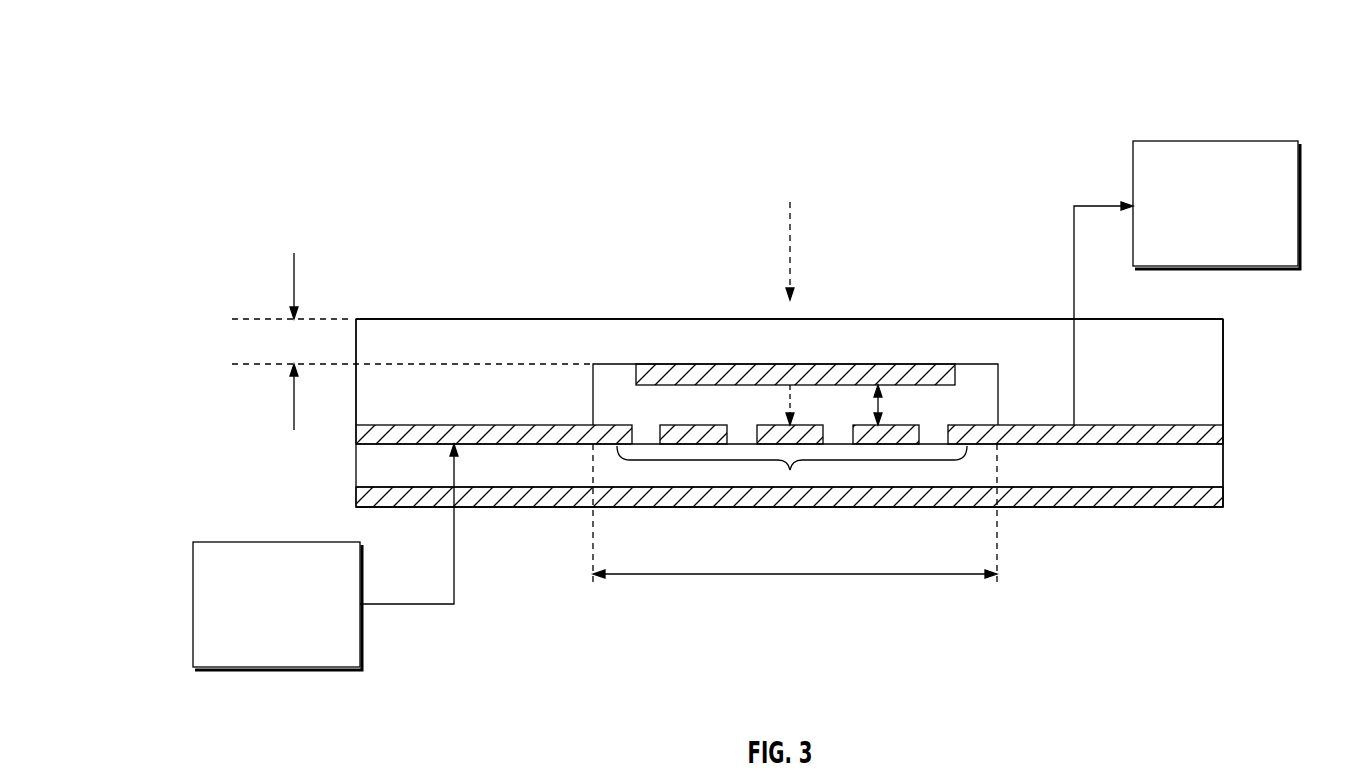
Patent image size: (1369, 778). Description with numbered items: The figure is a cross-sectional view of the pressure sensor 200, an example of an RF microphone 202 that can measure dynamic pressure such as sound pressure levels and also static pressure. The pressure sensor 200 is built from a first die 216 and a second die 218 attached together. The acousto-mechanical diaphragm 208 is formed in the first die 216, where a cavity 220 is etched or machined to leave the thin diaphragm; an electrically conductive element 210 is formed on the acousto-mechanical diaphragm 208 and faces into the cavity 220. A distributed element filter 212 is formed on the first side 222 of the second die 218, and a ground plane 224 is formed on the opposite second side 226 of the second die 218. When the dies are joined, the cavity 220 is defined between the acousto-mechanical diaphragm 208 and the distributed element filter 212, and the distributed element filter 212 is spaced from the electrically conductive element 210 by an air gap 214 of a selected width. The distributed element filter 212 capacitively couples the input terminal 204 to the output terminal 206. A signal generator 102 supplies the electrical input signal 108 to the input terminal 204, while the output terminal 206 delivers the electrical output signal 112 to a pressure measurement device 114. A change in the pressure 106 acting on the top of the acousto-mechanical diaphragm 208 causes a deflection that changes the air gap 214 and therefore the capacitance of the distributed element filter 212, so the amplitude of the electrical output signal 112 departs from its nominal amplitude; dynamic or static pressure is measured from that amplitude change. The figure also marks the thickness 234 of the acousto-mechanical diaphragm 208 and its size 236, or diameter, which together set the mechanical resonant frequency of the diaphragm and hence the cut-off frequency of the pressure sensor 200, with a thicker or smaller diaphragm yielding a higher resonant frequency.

The signal generator 102 is at (277, 542).
The pressure 106 is at (801, 141).
The electrical input signal 108 is at (408, 604).
The electrical output signal 112 is at (1074, 280).
The pressure measurement device 114 is at (1212, 141).
The pressure sensor 200 is at (486, 184).
The RF microphone 202 is at (434, 319).
The input terminal 204 is at (418, 425).
The output terminal 206 is at (1115, 425).
The acousto-mechanical diaphragm 208 is at (912, 308).
The electrically conductive element 210 is at (690, 385).
The distributed element filter 212 is at (790, 470).
The air gap 214 is at (942, 403).
The first die 216 is at (1223, 350).
The second die 218 is at (1223, 465).
The cavity 220 is at (748, 417).
The first side 222 is at (1190, 440).
The ground plane 224 is at (1223, 500).
The second side 226 is at (1137, 490).
The thickness 234 is at (228, 342).
The size 236 is at (666, 592).